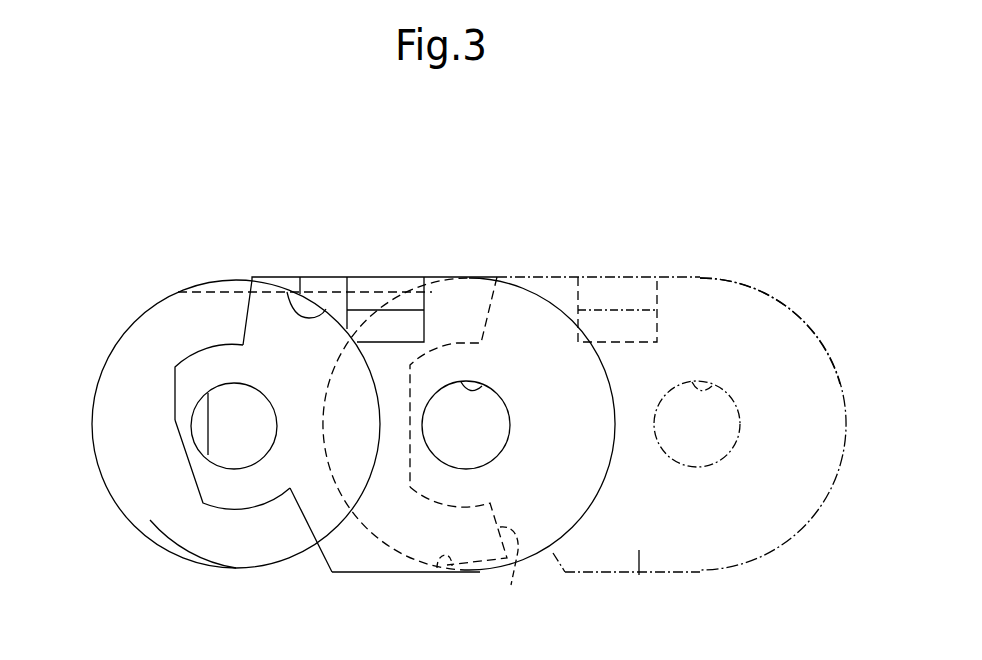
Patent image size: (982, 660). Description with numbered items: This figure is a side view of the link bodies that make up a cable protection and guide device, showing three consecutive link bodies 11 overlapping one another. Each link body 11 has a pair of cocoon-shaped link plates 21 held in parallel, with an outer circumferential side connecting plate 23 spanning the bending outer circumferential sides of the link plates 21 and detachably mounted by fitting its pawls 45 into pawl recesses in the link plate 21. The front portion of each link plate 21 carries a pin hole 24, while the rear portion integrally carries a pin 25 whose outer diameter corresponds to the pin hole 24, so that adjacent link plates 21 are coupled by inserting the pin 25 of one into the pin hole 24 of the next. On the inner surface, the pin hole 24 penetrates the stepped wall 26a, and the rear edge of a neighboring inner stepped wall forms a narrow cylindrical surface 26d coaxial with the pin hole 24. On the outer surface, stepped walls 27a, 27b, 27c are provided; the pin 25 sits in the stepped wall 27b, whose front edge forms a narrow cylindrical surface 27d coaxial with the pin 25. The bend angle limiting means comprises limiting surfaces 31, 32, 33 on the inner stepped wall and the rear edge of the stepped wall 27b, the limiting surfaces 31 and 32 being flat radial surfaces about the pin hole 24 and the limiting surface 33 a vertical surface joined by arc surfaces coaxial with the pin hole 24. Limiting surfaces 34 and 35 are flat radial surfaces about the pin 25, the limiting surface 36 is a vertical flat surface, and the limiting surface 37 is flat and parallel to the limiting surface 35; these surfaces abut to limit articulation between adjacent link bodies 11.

The link body 11 is at (136, 319).
The link plate 21 is at (439, 276).
The outer circumferential side connecting plate 23 is at (337, 276).
The pin hole 24 is at (480, 387).
The pin 25 is at (245, 397).
The stepped wall 26a is at (735, 300).
The narrow cylindrical surface 26d is at (447, 560).
The stepped wall 27a is at (365, 560).
The stepped wall 27b is at (272, 313).
The stepped wall 27c is at (170, 527).
The narrow cylindrical surface 27d is at (291, 305).
The limiting surface 31 is at (497, 276).
The limiting surface 32 is at (511, 585).
The limiting surface 33 is at (455, 526).
The limiting surface 34 is at (180, 295).
The limiting surface 35 is at (320, 560).
The limiting surface 36 is at (173, 387).
The limiting surface 37 is at (190, 468).
The pawl 45 is at (388, 289).